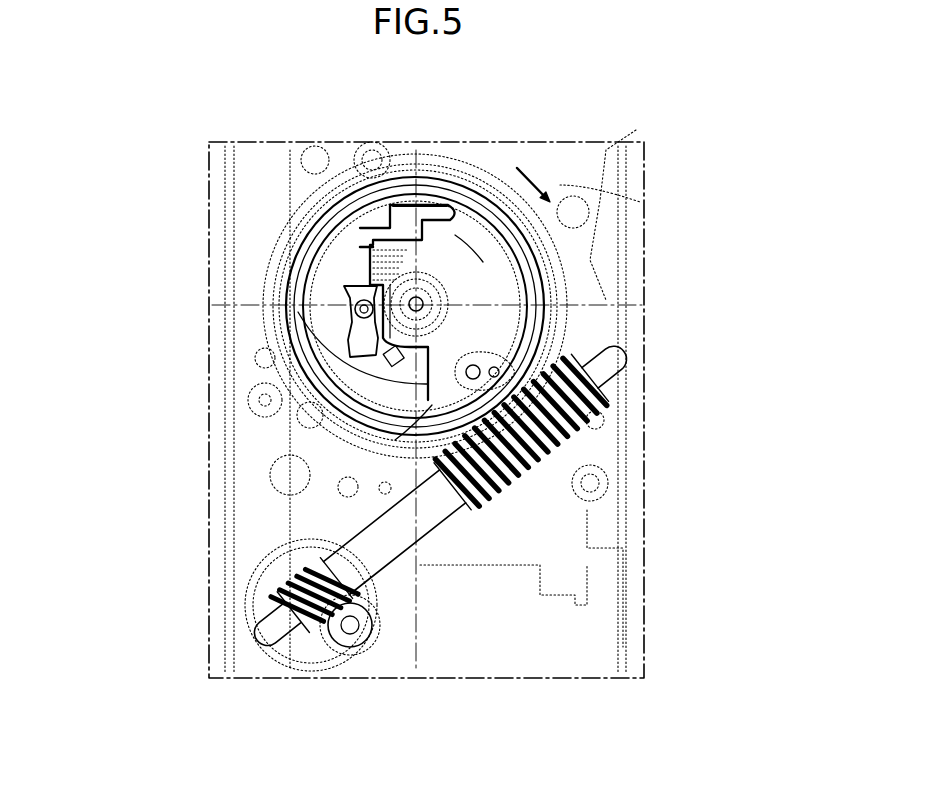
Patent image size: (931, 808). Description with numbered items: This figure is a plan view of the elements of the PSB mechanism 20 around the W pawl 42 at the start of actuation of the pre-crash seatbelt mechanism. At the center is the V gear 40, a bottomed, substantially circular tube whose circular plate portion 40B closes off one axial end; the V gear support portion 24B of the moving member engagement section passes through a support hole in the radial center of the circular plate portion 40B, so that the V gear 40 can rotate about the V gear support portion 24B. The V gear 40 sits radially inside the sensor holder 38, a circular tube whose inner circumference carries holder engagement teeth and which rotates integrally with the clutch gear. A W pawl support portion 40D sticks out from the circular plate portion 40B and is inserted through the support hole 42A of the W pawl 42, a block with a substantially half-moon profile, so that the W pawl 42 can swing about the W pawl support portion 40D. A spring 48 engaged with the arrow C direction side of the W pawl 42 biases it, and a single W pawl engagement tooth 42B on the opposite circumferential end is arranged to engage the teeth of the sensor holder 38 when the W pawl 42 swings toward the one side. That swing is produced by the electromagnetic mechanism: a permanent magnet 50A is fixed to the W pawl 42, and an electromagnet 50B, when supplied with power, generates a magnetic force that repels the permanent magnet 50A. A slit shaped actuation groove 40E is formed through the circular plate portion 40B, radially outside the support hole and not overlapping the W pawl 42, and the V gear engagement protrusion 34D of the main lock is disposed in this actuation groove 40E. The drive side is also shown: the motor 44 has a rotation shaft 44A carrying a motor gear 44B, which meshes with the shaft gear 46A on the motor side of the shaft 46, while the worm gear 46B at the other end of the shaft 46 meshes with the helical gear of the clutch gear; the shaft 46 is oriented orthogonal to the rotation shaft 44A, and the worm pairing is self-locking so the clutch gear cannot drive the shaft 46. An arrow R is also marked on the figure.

The PSB mechanism 20 is at (606, 620).
The V gear support portion 24B is at (418, 300).
The V gear engagement protrusion 34D is at (480, 367).
The sensor holder 38 is at (556, 270).
The V gear 40 is at (507, 271).
The circular plate portion 40B is at (412, 238).
The W pawl support portion 40D is at (345, 300).
The actuation groove 40E is at (604, 383).
The W pawl 42 is at (342, 263).
The support hole 42A is at (352, 312).
The W pawl engagement tooth 42B is at (427, 408).
The motor 44 is at (456, 651).
The rotation shaft 44A is at (348, 640).
The motor gear 44B is at (372, 640).
The shaft 46 is at (452, 519).
The shaft gear 46A is at (290, 557).
The worm gear 46B is at (512, 478).
The spring 48 is at (390, 228).
The permanent magnet 50A is at (287, 343).
The electromagnet 50B is at (640, 202).
The arrow C direction C is at (530, 187).
The direction R is at (292, 432).